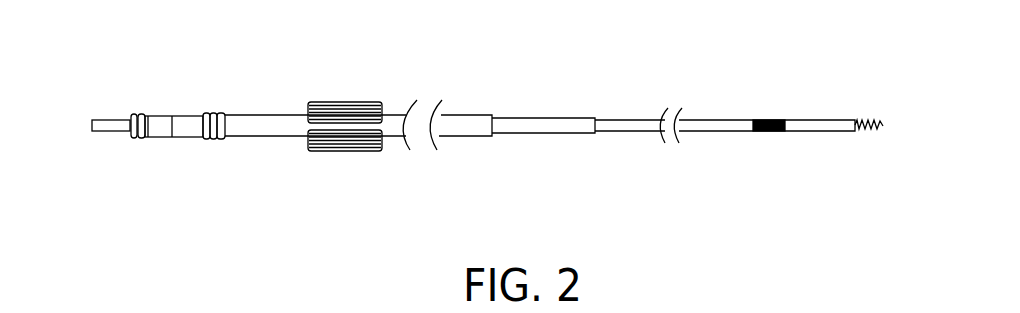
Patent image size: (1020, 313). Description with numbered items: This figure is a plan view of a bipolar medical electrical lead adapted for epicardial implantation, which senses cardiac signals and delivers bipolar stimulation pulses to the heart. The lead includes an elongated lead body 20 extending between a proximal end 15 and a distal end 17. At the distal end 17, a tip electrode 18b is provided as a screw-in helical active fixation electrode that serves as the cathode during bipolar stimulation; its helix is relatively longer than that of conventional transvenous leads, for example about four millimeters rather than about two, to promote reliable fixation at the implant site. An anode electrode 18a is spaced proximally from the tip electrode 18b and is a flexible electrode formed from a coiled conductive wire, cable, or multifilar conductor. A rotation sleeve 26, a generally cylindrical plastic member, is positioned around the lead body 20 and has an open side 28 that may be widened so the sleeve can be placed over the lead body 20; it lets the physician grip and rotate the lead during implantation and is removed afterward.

The proximal end 15 is at (176, 148).
The lead body 20 is at (474, 80).
The rotation sleeve 26 is at (328, 151).
The open side 28 is at (382, 122).
The distal end 17 is at (842, 166).
The anode electrode 18a is at (760, 120).
The tip electrode 18b is at (868, 118).